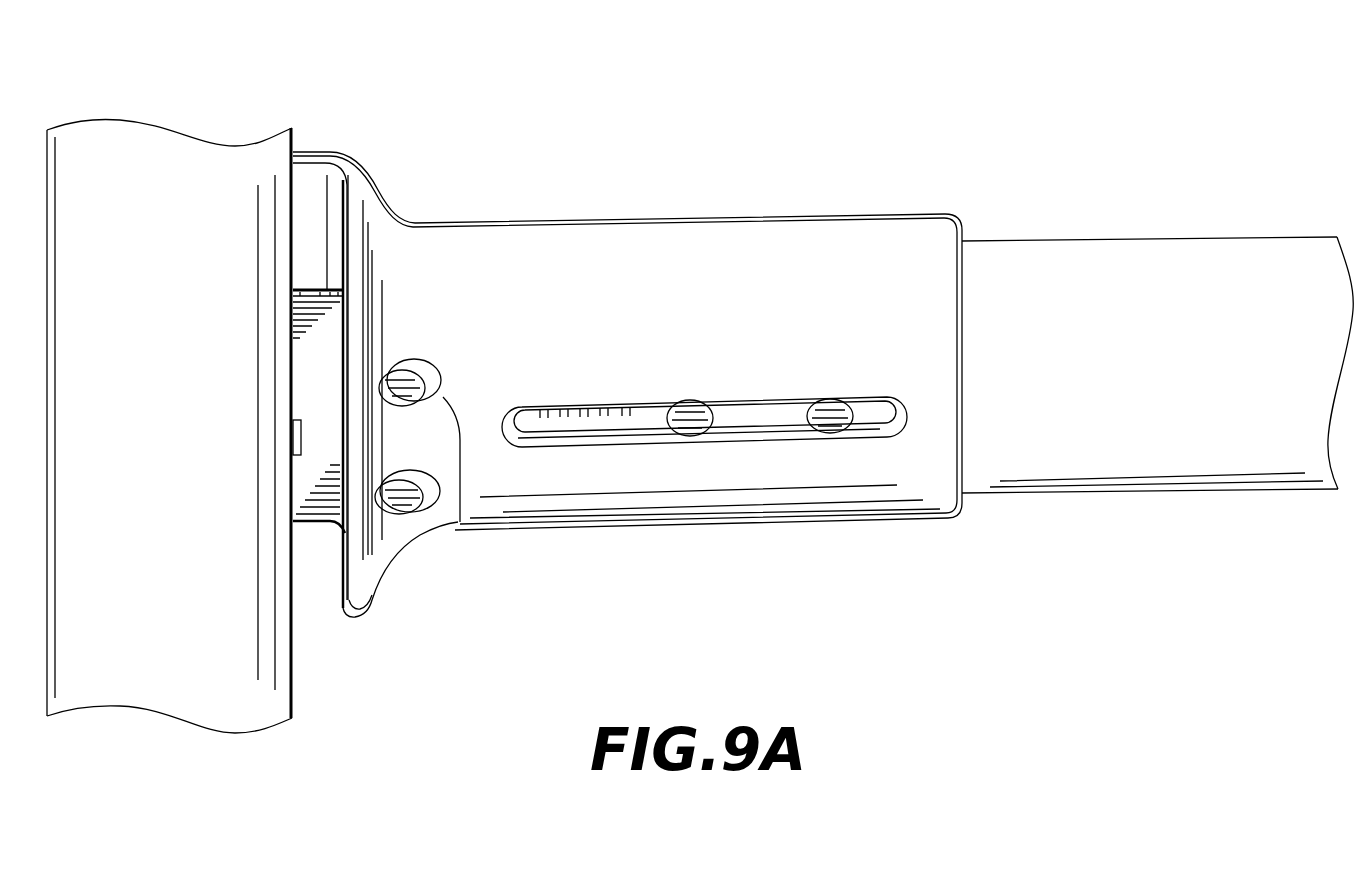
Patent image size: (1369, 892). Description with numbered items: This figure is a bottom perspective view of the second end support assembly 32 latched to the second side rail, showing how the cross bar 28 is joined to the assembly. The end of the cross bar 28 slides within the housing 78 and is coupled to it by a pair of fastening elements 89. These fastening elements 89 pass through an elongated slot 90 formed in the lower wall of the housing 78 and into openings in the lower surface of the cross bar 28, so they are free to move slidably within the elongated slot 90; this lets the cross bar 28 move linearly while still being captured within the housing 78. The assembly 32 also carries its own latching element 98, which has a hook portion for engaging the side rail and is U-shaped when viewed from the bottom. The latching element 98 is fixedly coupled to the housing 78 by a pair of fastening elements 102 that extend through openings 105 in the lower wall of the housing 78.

The cross bar 28 is at (1206, 237).
The second end support assembly 32 is at (687, 330).
The housing 78 is at (641, 213).
The fastening elements 89 is at (680, 442).
The elongated slot 90 is at (592, 432).
The latching element 98 is at (334, 393).
The fastening elements 102 is at (455, 505).
The openings 105 is at (396, 405).